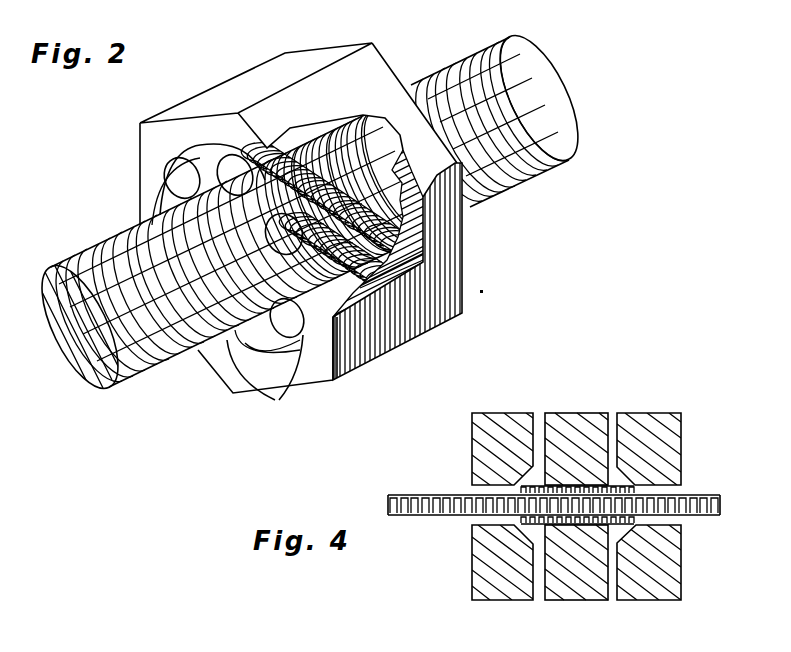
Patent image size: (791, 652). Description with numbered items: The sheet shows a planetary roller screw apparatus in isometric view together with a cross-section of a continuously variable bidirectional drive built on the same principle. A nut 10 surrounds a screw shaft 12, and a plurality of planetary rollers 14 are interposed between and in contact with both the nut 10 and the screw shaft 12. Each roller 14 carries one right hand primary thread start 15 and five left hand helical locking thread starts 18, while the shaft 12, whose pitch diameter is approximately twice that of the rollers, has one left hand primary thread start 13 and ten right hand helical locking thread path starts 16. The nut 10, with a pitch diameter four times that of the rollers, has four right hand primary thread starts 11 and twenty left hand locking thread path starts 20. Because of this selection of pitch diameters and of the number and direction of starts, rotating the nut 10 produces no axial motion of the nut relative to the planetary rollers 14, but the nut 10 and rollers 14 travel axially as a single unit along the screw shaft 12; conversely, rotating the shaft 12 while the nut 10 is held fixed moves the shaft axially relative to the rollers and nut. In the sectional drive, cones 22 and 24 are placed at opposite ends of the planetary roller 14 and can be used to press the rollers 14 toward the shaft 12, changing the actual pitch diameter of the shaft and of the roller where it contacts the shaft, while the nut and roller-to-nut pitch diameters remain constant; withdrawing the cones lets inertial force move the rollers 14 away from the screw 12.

In FIG. 2, the nut 10 is at (372, 72).
In FIG. 4, the nut 10 is at (585, 430).
In FIG. 2, the right hand primary thread starts 11 is at (157, 180).
In FIG. 2, the screw shaft 12 is at (72, 366).
In FIG. 4, the screw shaft 12 is at (430, 493).
In FIG. 2, the left hand primary thread start 13 is at (147, 378).
In FIG. 2, the planetary rollers 14 is at (277, 400).
In FIG. 4, the planetary rollers 14 is at (620, 480).
In FIG. 2, the right hand primary thread start 15 is at (322, 185).
In FIG. 2, the right hand helical locking thread path starts 16 is at (113, 240).
In FIG. 2, the left hand helical locking thread starts 18 is at (358, 315).
In FIG. 2, the left hand locking thread path starts 20 is at (157, 190).
In FIG. 4, the cone 22 is at (653, 432).
In FIG. 4, the cone 24 is at (510, 432).